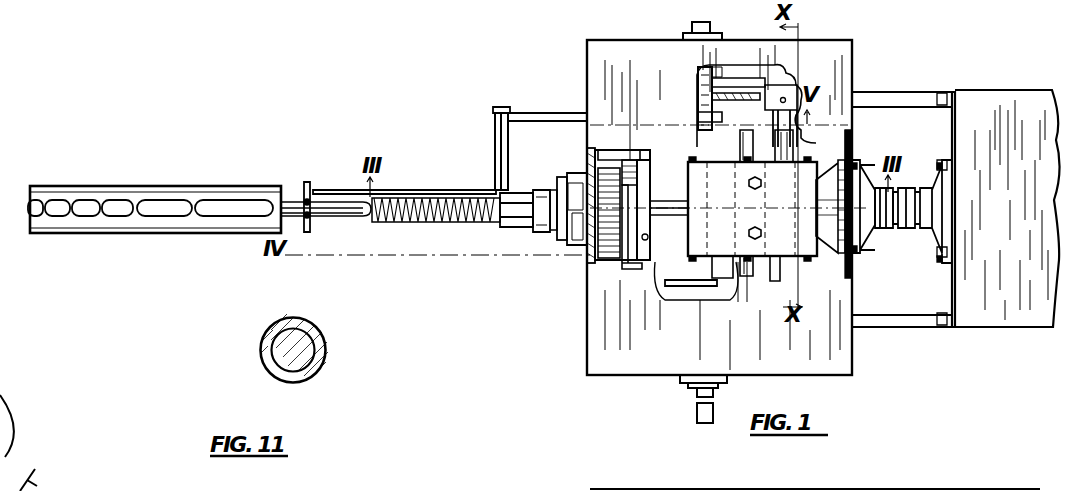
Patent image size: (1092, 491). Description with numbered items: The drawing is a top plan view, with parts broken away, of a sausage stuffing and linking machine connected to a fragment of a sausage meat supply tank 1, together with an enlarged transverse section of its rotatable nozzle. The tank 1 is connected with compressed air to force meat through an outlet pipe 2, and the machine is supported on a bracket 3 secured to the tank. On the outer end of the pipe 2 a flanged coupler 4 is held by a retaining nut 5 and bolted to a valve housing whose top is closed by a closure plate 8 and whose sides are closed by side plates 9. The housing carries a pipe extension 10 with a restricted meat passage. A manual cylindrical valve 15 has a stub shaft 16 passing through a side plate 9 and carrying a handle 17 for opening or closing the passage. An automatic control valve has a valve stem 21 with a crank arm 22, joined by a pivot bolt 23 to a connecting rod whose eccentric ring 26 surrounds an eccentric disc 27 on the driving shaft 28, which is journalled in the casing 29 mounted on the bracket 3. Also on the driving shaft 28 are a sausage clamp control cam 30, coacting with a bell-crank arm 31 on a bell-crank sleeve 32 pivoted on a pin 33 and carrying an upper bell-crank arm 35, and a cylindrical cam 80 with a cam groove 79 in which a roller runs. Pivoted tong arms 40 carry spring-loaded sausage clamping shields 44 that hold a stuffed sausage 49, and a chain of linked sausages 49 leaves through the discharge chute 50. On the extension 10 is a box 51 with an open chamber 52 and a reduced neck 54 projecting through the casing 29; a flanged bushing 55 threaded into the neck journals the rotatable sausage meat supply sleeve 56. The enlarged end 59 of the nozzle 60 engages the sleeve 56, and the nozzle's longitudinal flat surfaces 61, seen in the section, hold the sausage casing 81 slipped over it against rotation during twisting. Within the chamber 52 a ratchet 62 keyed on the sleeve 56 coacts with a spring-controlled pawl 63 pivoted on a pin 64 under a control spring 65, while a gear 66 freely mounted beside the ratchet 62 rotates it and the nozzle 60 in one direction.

In FIG. 1, the sausage meat supply tank 1 is at (997, 103).
In FIG. 1, the outlet pipe 2 is at (923, 223).
In FIG. 1, the bracket 3 is at (900, 72).
In FIG. 1, the flanged coupler 4 is at (867, 233).
In FIG. 1, the retaining nut 5 is at (888, 193).
In FIG. 1, the closure plate 8 is at (717, 232).
In FIG. 1, the side plates 9 is at (730, 161).
In FIG. 1, the pipe extension 10 is at (678, 183).
In FIG. 1, the cylindrical valve 15 is at (720, 218).
In FIG. 1, the stub shaft 16 is at (714, 297).
In FIG. 1, the handle 17 is at (668, 293).
In FIG. 1, the valve stem 21 is at (797, 151).
In FIG. 1, the crank arm 22 is at (770, 94).
In FIG. 1, the pivot bolt 23 is at (710, 70).
In FIG. 1, the eccentric ring 26 is at (696, 87).
In FIG. 1, the eccentric disc 27 is at (743, 84).
In FIG. 1, the driving shaft 28 is at (729, 385).
In FIG. 1, the casing 29 is at (845, 353).
In FIG. 1, the sausage clamp control cam 30 is at (722, 117).
In FIG. 1, the bell-crank arm 31 is at (578, 88).
In FIG. 1, the bell-crank sleeve 32 is at (498, 156).
In FIG. 1, the pin 33 is at (504, 103).
In FIG. 1, the upper bell-crank arm 35 is at (443, 184).
In FIG. 1, the tong arms 40 is at (330, 163).
In FIG. 1, the sausage clamping shield 44 is at (288, 203).
In FIG. 1, the stuffed sausage 49 is at (205, 199).
In FIG. 1, the sausage discharge chute 50 is at (136, 231).
In FIG. 1, the box 51 is at (652, 138).
In FIG. 1, the chamber 52 is at (617, 150).
In FIG. 1, the reduced neck 54 is at (566, 177).
In FIG. 1, the flanged bushing 55 is at (555, 192).
In FIG. 1, the sausage meat supply sleeve 56 is at (551, 231).
In FIG. 1, the enlarged end 59 is at (513, 227).
In FIG. 11, the nozzle 60 is at (260, 347).
In FIG. 11, the flat surfaces 61 is at (327, 350).
In FIG. 1, the ratchet 62 is at (635, 186).
In FIG. 1, the pawl 63 is at (595, 265).
In FIG. 1, the pin 64 is at (590, 257).
In FIG. 1, the control spring 65 is at (646, 260).
In FIG. 1, the gear 66 is at (570, 246).
In FIG. 1, the cam groove 79 is at (920, 488).
In FIG. 1, the cylindrical cam 80 is at (700, 147).
In FIG. 1, the sausage casing 81 is at (441, 219).